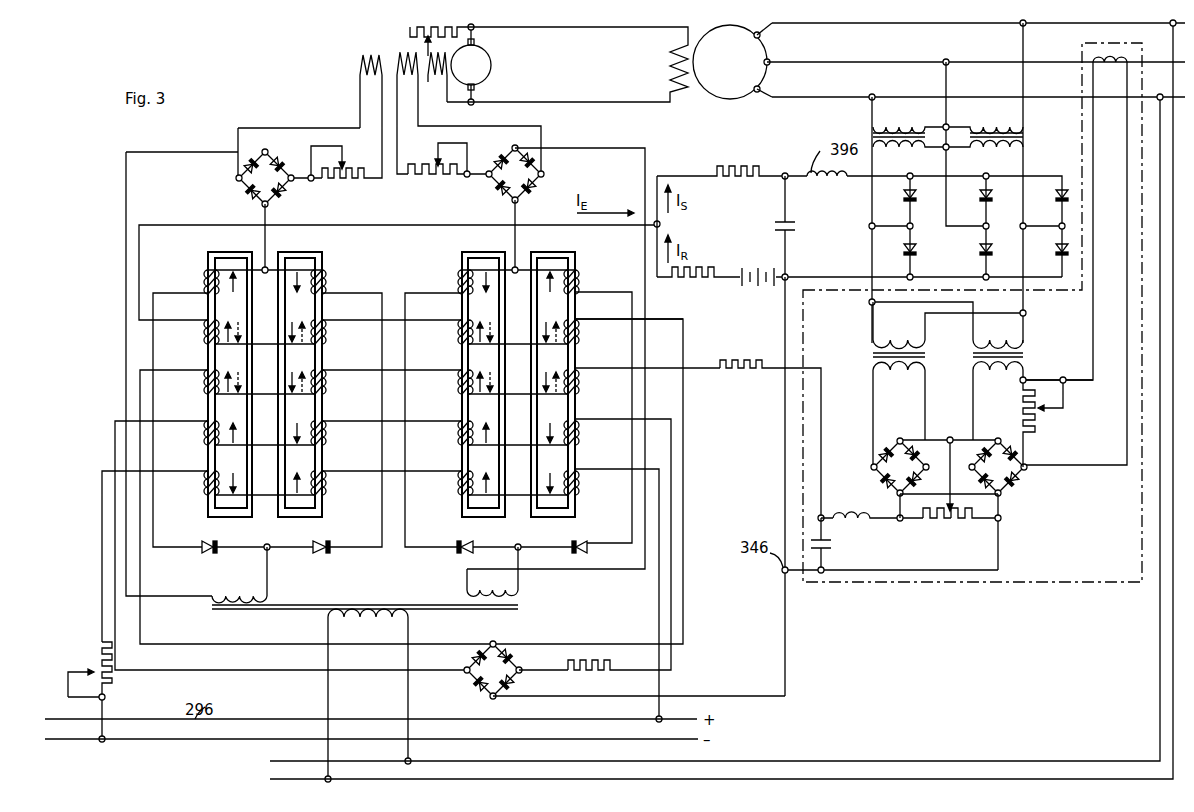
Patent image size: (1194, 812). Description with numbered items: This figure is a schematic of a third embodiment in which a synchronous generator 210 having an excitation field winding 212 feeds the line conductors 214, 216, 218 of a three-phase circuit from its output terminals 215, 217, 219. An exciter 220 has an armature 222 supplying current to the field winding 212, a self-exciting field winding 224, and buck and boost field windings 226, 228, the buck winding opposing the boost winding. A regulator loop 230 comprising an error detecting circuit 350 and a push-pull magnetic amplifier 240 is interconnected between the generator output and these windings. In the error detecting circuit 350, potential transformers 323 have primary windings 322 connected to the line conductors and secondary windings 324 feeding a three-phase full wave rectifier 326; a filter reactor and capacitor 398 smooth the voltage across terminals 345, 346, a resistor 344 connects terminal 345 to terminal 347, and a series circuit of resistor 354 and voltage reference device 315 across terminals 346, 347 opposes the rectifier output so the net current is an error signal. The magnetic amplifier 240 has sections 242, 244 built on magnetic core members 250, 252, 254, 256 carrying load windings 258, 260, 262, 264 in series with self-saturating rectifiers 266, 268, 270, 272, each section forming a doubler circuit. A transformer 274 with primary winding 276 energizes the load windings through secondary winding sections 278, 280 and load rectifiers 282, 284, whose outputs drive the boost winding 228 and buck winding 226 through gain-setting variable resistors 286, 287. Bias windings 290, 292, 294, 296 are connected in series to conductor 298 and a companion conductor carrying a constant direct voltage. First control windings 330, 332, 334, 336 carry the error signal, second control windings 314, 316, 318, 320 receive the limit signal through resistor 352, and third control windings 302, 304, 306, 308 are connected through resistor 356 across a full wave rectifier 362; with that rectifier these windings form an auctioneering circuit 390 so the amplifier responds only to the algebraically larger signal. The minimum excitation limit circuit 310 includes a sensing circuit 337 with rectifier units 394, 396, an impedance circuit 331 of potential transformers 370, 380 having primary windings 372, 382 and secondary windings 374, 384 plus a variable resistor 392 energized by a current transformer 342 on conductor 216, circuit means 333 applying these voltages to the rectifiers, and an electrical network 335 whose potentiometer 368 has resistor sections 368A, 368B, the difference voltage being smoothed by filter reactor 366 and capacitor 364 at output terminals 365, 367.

The synchronous generator 210 is at (742, 116).
The excitation field winding 212 is at (667, 63).
The line conductor 214 is at (843, 24).
The output terminal 215 is at (760, 37).
The line conductor 216 is at (843, 62).
The output terminal 217 is at (769, 64).
The line conductor 218 is at (843, 97).
The output terminal 219 is at (758, 92).
The exciter 220 is at (527, 82).
The armature 222 is at (479, 51).
The self-exciting field winding 224 is at (430, 84).
The buck excitation field winding 226 is at (405, 50).
The boost excitation field winding 228 is at (358, 62).
The regulator loop 230 is at (117, 395).
The push-pull magnetic amplifier 240 is at (404, 590).
The section 242 is at (281, 535).
The section 244 is at (534, 533).
The magnetic core member 250 is at (233, 247).
The magnetic core member 252 is at (305, 237).
The magnetic core member 254 is at (486, 247).
The magnetic core member 256 is at (556, 237).
The load winding 258 is at (204, 286).
The load winding 260 is at (330, 286).
The load winding 262 is at (456, 286).
The load winding 264 is at (580, 286).
The self-saturating rectifier 266 is at (202, 544).
The self-saturating rectifier 268 is at (321, 546).
The self-saturating rectifier 270 is at (458, 543).
The self-saturating rectifier 272 is at (575, 545).
The transformer 274 is at (299, 636).
The primary winding 276 is at (392, 622).
The secondary winding section 278 is at (246, 596).
The secondary winding section 280 is at (508, 597).
The full wave dry type load rectifier 282 is at (276, 195).
The full wave dry type load rectifier 284 is at (501, 196).
The variable resistor 286 is at (342, 181).
The variable resistor 287 is at (440, 180).
The bias winding 290 is at (204, 485).
The bias winding 292 is at (328, 485).
The bias winding 294 is at (456, 485).
The bias winding 296 is at (579, 485).
The conductor 298 is at (208, 752).
The third control winding 302 is at (204, 433).
The third control winding 304 is at (328, 435).
The third control winding 306 is at (456, 433).
The third control winding 308 is at (579, 435).
The minimum excitation limit circuit 310 is at (1056, 601).
The second control winding 314 is at (204, 384).
The voltage reference device 315 is at (741, 299).
The second control winding 316 is at (328, 384).
The second control winding 318 is at (456, 384).
The second control winding 320 is at (579, 384).
The primary winding 322 is at (972, 122).
The potential transformer 323 is at (964, 143).
The secondary winding 324 is at (970, 153).
The three-phase full wave rectifier 326 is at (961, 253).
The first control winding 330 is at (205, 336).
The impedance circuit 331 is at (1093, 311).
The first control winding 332 is at (329, 336).
The circuit means 333 is at (956, 399).
The first control winding 334 is at (456, 336).
The electrical network 335 is at (950, 494).
The first control winding 336 is at (579, 336).
The sensing circuit 337 is at (859, 443).
The current transformer 342 is at (1097, 50).
The resistor 344 is at (731, 160).
The terminal 345 is at (784, 172).
The output terminal 346 is at (788, 275).
The output terminal 347 is at (661, 224).
The error detecting circuit 350 is at (747, 253).
The resistor 352 is at (744, 356).
The resistor 354 is at (708, 288).
The resistor 356 is at (613, 665).
The full wave rectifier 362 is at (475, 679).
The capacitor 364 is at (832, 548).
The output terminal 365 is at (818, 518).
The linear filter reactor 366 is at (838, 521).
The output terminal 367 is at (824, 573).
The potentiometer 368 is at (955, 530).
The resistor section 368A is at (933, 521).
The resistor section 368B is at (958, 521).
The potential transformer 370 is at (854, 355).
The primary winding 372 is at (917, 340).
The secondary winding 374 is at (907, 389).
The potential transformer 380 is at (1072, 356).
The primary winding 382 is at (1012, 340).
The secondary winding 384 is at (998, 373).
The auctioneering circuit 390 is at (569, 693).
The variable resistor 392 is at (1042, 423).
The full-wave dry-type rectifier unit 394 is at (890, 487).
The full-wave dry-type rectifier unit 396 is at (1010, 485).
The capacitor 398 is at (792, 226).